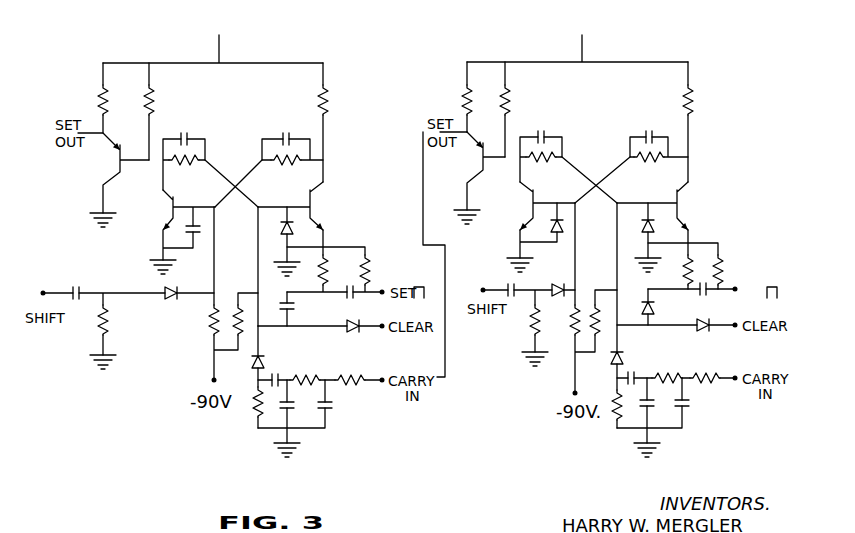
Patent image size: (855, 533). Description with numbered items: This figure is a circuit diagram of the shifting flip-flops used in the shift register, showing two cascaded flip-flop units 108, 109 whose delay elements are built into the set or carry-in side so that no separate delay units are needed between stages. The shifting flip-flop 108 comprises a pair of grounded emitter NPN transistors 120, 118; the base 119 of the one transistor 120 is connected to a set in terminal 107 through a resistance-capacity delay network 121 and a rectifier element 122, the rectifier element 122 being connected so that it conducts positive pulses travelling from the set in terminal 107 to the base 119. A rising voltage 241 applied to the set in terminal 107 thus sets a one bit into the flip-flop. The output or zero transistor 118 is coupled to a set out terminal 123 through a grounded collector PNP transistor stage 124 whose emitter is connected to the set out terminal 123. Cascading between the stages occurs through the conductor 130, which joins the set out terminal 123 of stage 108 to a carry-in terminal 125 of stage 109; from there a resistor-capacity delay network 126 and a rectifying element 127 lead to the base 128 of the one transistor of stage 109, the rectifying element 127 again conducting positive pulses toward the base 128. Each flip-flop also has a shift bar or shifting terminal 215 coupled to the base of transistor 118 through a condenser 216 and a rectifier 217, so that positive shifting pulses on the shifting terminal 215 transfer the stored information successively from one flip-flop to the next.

The set in terminal 107 is at (731, 282).
The shifting flip-flop 108 is at (633, 58).
The shifting flip-flop 109 is at (264, 56).
The output or zero transistor 118 is at (538, 197).
The base 119 is at (672, 191).
The one transistor 120 is at (684, 197).
The resistance-capacity delay network 121 is at (703, 250).
The rectifier element 122 is at (655, 308).
The set out terminal 123 is at (436, 132).
The PNP transistor stage 124 is at (487, 141).
The carry-in terminal 125 is at (382, 385).
The resistor-capacity delay network 126 is at (306, 418).
The rectifying element 127 is at (248, 370).
The base 128 is at (308, 194).
The conductor 130 is at (423, 219).
The shift bar or shifting terminal 215 is at (483, 290).
The condenser 216 is at (510, 304).
The rectifier 217 is at (553, 304).
The rising voltage 241 is at (786, 268).